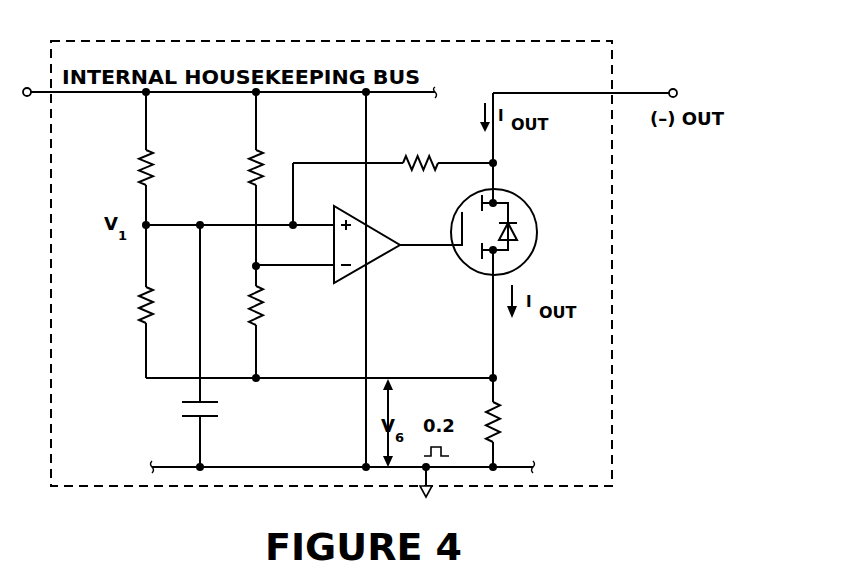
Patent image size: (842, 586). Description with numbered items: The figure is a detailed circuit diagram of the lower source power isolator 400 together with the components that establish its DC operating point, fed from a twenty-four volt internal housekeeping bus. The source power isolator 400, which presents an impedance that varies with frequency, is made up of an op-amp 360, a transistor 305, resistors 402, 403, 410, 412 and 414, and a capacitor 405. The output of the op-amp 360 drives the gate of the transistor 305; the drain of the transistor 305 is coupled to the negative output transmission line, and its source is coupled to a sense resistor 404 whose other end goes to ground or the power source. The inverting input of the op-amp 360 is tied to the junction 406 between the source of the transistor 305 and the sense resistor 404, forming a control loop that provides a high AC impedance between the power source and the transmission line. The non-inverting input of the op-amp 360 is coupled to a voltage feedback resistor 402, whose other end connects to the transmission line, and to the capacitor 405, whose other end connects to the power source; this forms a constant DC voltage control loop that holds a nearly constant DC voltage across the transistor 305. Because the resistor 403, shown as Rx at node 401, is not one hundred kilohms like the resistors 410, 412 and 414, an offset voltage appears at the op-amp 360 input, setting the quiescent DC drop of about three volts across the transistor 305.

The source power isolator 400 is at (530, 41).
The 100K resistor 414 is at (150, 151).
The resistor 410 is at (260, 151).
The resistor 412 is at (172, 272).
The node V2 401 is at (262, 268).
The resistor 403 is at (262, 324).
The voltage feedback resistor 402 is at (411, 169).
The op-amp 360 is at (375, 256).
The transistor 305 is at (535, 215).
The junction 406 is at (496, 376).
The sense resistor 404 is at (499, 405).
The capacitor 405 is at (205, 418).